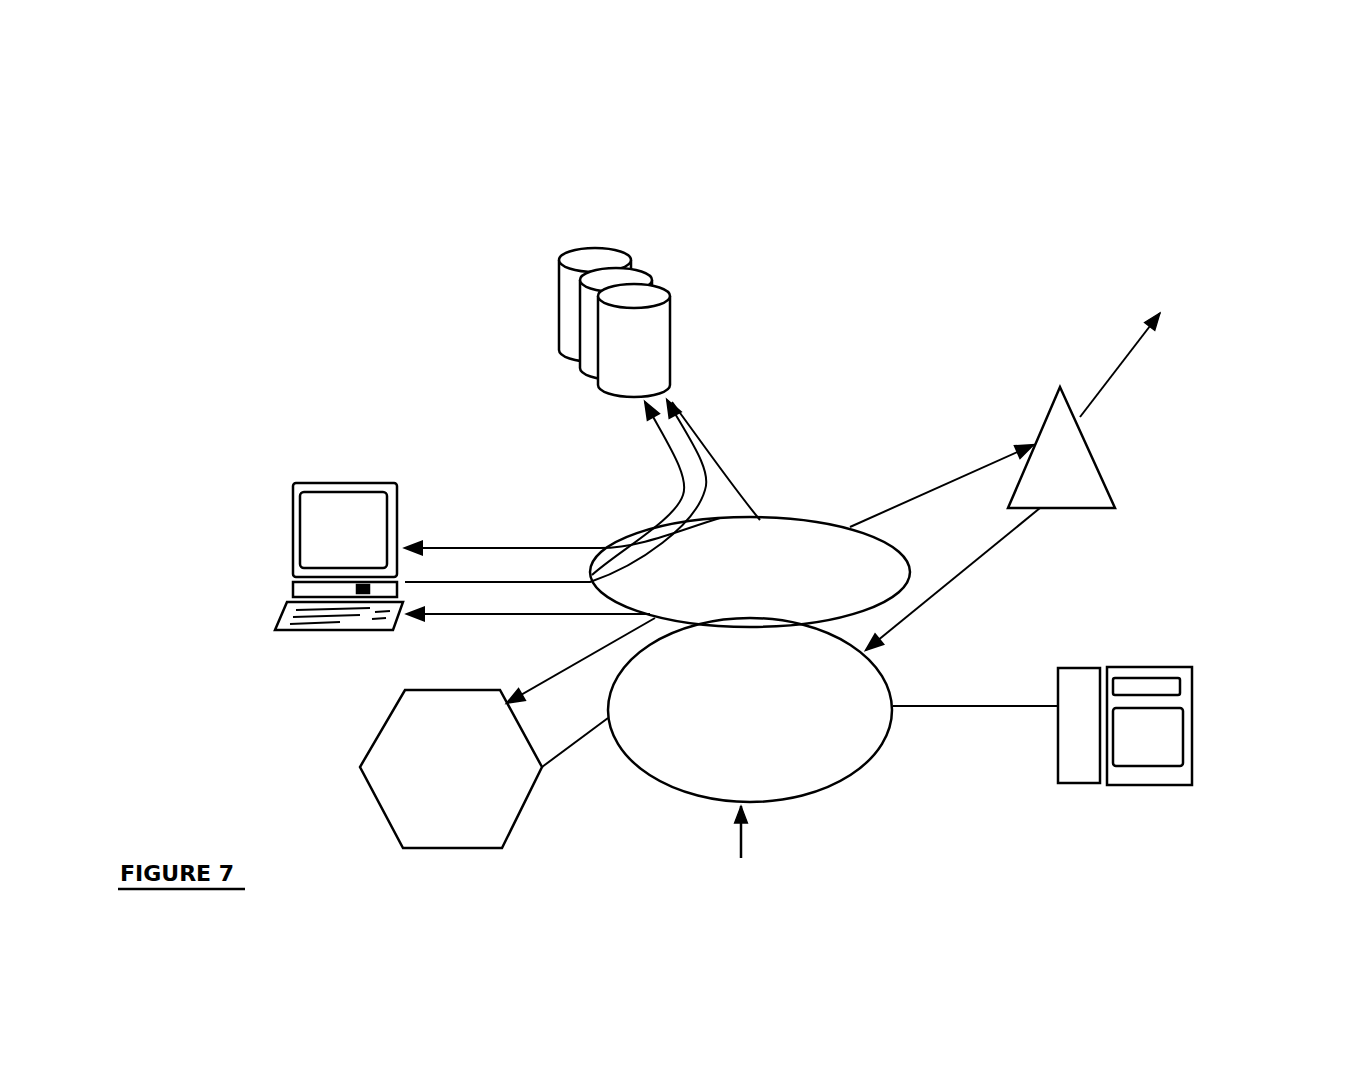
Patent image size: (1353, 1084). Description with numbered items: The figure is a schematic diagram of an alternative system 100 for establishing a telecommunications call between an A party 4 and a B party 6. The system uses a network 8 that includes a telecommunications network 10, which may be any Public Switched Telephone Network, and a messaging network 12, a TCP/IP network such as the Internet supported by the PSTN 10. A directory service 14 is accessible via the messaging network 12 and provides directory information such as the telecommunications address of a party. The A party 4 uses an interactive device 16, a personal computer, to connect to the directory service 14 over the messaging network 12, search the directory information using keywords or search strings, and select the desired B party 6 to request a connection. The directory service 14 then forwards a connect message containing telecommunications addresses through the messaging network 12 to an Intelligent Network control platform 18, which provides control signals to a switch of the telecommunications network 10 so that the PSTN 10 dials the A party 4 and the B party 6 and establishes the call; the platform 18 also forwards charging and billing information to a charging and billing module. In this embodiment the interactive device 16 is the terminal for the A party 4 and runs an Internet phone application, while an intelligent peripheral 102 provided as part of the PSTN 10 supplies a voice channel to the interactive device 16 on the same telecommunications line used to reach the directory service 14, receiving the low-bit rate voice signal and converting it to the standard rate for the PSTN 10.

The alternative system 100 is at (317, 210).
The A party 4 is at (270, 597).
The interactive device 16 is at (293, 523).
The directory service 14 is at (670, 350).
The messaging network 12 is at (750, 572).
The Intelligent Network control platform 18 is at (1093, 453).
The telecommunications network 10 is at (750, 710).
The network 8 is at (740, 851).
The intelligent peripheral 102 is at (385, 723).
The B party 6 is at (1192, 736).